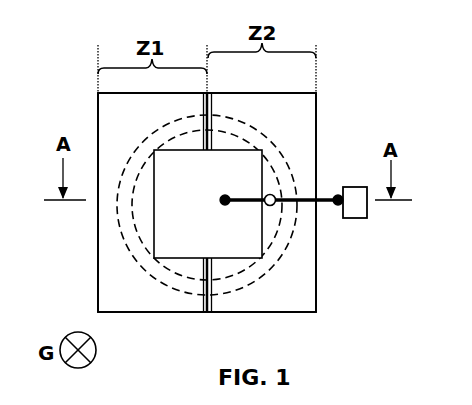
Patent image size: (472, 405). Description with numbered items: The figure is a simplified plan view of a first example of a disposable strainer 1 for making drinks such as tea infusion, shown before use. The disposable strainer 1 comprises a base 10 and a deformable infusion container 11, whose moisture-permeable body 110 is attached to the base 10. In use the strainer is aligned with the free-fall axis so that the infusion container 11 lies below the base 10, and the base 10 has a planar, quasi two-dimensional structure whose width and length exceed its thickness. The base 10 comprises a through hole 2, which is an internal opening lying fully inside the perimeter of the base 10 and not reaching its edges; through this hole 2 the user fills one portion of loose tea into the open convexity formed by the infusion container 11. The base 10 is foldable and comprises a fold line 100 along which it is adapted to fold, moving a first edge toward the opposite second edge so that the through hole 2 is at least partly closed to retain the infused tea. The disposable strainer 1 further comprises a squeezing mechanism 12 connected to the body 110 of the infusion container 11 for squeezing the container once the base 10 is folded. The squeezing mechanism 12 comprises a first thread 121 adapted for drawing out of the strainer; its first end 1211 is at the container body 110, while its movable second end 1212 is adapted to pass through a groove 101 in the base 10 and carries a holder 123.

The disposable strainer 1 is at (83, 102).
The base 10 is at (306, 314).
The infusion container 11 is at (118, 262).
The body 110 is at (127, 209).
The fold line 100 is at (202, 100).
The through hole 2 is at (156, 182).
The squeezing mechanism 12 is at (293, 198).
The first thread 121 is at (307, 196).
The first end of the first thread 1211 is at (221, 204).
The groove 101 is at (273, 208).
The second end 1212 is at (338, 196).
The holder 123 is at (355, 220).